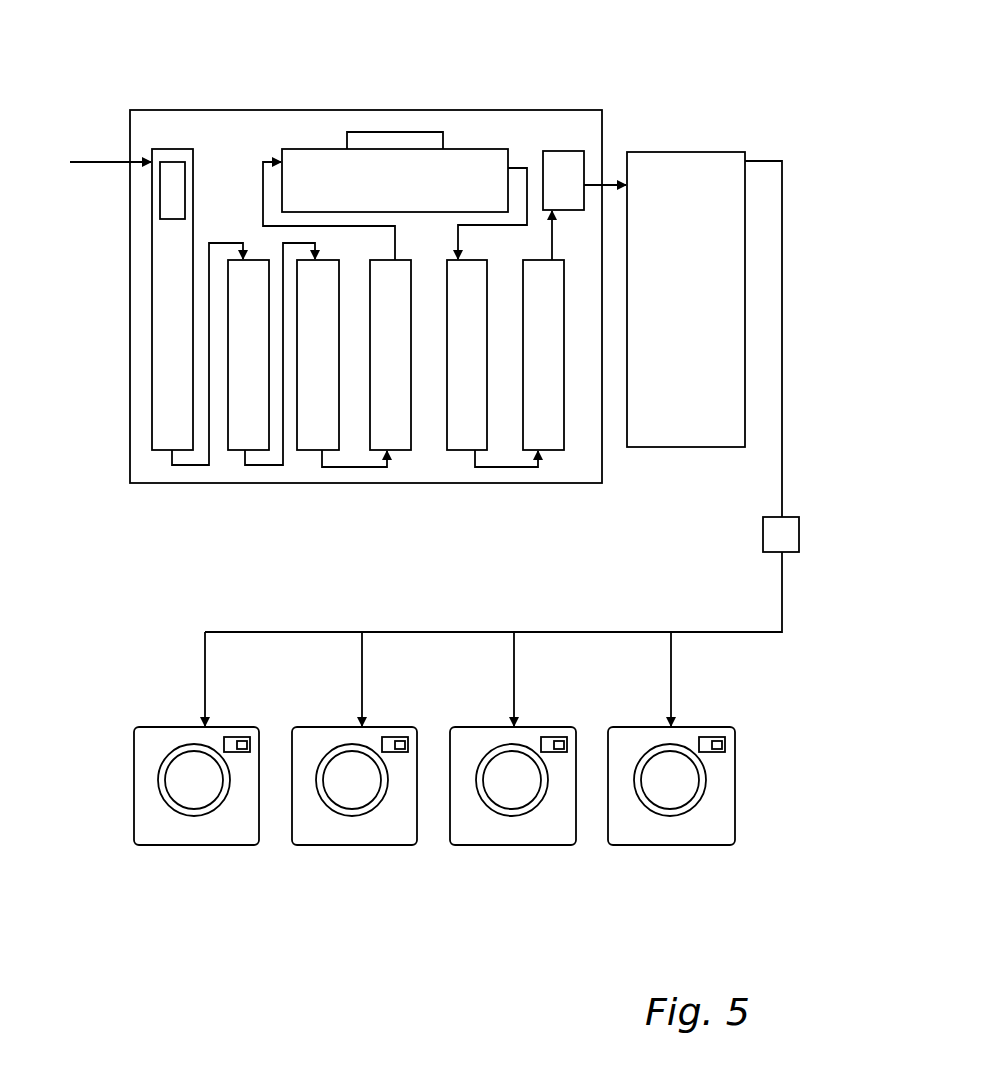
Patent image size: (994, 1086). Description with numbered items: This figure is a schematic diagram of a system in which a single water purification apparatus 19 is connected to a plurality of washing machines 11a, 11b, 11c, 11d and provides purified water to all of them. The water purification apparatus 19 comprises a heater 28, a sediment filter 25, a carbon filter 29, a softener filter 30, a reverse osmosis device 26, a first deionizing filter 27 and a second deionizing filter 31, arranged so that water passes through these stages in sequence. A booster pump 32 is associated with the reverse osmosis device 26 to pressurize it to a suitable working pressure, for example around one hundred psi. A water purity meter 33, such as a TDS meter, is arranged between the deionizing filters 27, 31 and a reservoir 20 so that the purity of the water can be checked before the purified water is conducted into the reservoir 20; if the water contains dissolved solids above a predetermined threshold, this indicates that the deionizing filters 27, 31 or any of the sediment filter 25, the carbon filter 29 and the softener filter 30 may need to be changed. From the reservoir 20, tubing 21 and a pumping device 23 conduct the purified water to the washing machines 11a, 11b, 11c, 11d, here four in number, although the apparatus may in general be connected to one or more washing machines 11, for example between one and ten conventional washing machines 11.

The water purification apparatus 19 is at (418, 40).
The reservoir 20 is at (680, 168).
The tubing 21 is at (624, 630).
The pumping device 23 is at (773, 531).
The filter 25 is at (237, 440).
The reverse osmosis device 26 is at (307, 166).
The first deionizing filter 27 is at (460, 437).
The heater 28 is at (160, 291).
The carbon filter 29 is at (311, 440).
The softener filter 30 is at (403, 437).
The second deionizing filter 31 is at (552, 437).
The booster pump 32 is at (362, 143).
The water purity meter 33 is at (574, 157).
The washing machine 11 is at (200, 810).
The washing machine 11a is at (238, 835).
The washing machine 11b is at (400, 835).
The washing machine 11c is at (562, 835).
The washing machine 11d is at (707, 835).